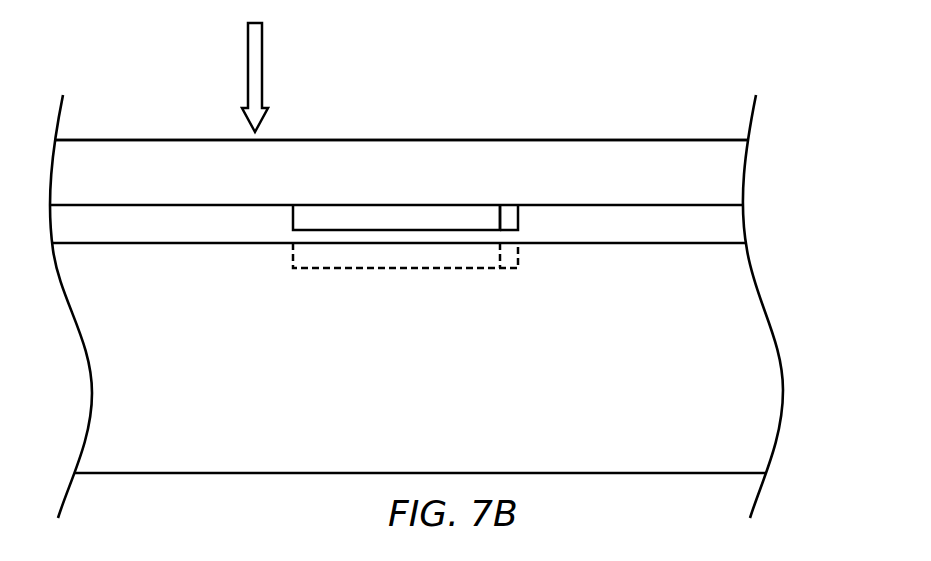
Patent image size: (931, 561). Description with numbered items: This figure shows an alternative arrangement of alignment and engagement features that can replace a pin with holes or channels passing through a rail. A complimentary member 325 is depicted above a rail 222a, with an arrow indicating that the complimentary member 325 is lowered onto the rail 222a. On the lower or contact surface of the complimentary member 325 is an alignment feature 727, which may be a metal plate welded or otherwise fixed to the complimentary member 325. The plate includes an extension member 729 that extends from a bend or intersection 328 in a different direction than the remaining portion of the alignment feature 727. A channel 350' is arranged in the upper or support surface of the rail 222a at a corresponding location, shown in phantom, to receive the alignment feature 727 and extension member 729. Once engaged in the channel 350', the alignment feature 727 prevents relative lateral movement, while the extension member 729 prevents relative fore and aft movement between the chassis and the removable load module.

The rail 222a is at (730, 387).
The complimentary member 325 is at (338, 158).
The alignment feature 727 is at (308, 215).
The divider wall 328 is at (496, 214).
The extension member 729 is at (512, 220).
The channel 350' is at (396, 277).